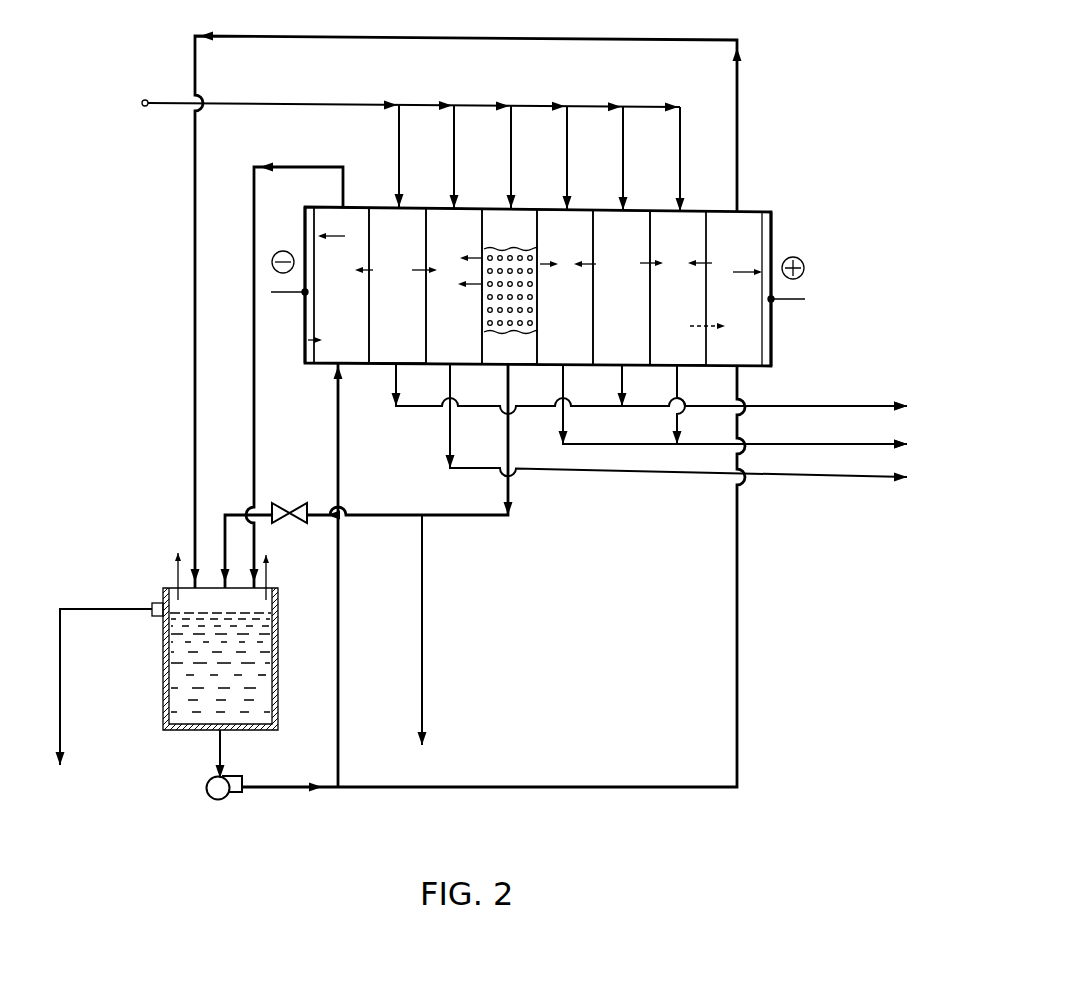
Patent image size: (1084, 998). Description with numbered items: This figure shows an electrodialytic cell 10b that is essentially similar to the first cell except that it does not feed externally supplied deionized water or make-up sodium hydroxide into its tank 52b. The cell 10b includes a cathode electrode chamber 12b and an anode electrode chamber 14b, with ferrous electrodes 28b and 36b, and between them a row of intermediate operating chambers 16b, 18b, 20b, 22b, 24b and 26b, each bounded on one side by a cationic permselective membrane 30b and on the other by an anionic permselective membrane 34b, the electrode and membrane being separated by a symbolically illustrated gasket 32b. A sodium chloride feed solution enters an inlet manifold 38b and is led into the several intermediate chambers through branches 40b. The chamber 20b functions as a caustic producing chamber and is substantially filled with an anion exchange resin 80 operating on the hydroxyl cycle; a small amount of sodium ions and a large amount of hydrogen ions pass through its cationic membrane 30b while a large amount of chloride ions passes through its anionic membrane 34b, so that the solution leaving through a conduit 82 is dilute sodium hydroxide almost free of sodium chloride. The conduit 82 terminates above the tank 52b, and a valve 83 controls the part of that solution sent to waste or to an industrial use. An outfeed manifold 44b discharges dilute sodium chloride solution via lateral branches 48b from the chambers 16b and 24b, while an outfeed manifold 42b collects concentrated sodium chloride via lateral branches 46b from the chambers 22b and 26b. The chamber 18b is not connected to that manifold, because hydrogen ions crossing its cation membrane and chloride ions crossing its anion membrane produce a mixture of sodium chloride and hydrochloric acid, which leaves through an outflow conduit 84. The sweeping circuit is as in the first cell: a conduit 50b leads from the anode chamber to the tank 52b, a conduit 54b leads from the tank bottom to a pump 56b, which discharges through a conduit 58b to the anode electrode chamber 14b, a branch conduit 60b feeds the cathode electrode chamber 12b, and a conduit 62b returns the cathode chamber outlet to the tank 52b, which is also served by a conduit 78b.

The cell 10b is at (783, 206).
The cathode electrode chamber 12b is at (308, 367).
The anode electrode chamber 14b is at (766, 368).
The intermediate operating chamber 16b is at (407, 209).
The intermediate operating chamber 18b is at (463, 209).
The intermediate operating chamber 20b is at (521, 210).
The intermediate operating chamber 22b is at (578, 211).
The intermediate operating chamber 24b is at (633, 212).
The intermediate operating chamber 26b is at (689, 212).
The ferrous electrode 28b is at (306, 326).
The cationic permselective membrane 30b is at (364, 326).
The gasket 32b is at (386, 372).
The anionic permselective membrane 34b is at (428, 323).
The ferrous electrode 36b is at (773, 240).
The inlet manifold 38b is at (307, 102).
The branches 40b is at (397, 142).
The outfeed manifold 42b is at (748, 448).
The outfeed manifold 44b is at (738, 412).
The lateral branches 46b is at (681, 400).
The lateral branches 48b is at (393, 398).
The conduit 50b is at (592, 24).
The tank 52b is at (163, 678).
The conduit 54b is at (217, 752).
The pump 56b is at (212, 797).
The conduit 58b is at (739, 752).
The branch conduit 60b is at (338, 730).
The conduit 62b is at (256, 438).
The conduit 78b is at (126, 606).
The anion exchange resin 80 is at (523, 248).
The conduit 82 is at (505, 441).
The valve 83 is at (294, 506).
The outflow conduit 84 is at (745, 487).